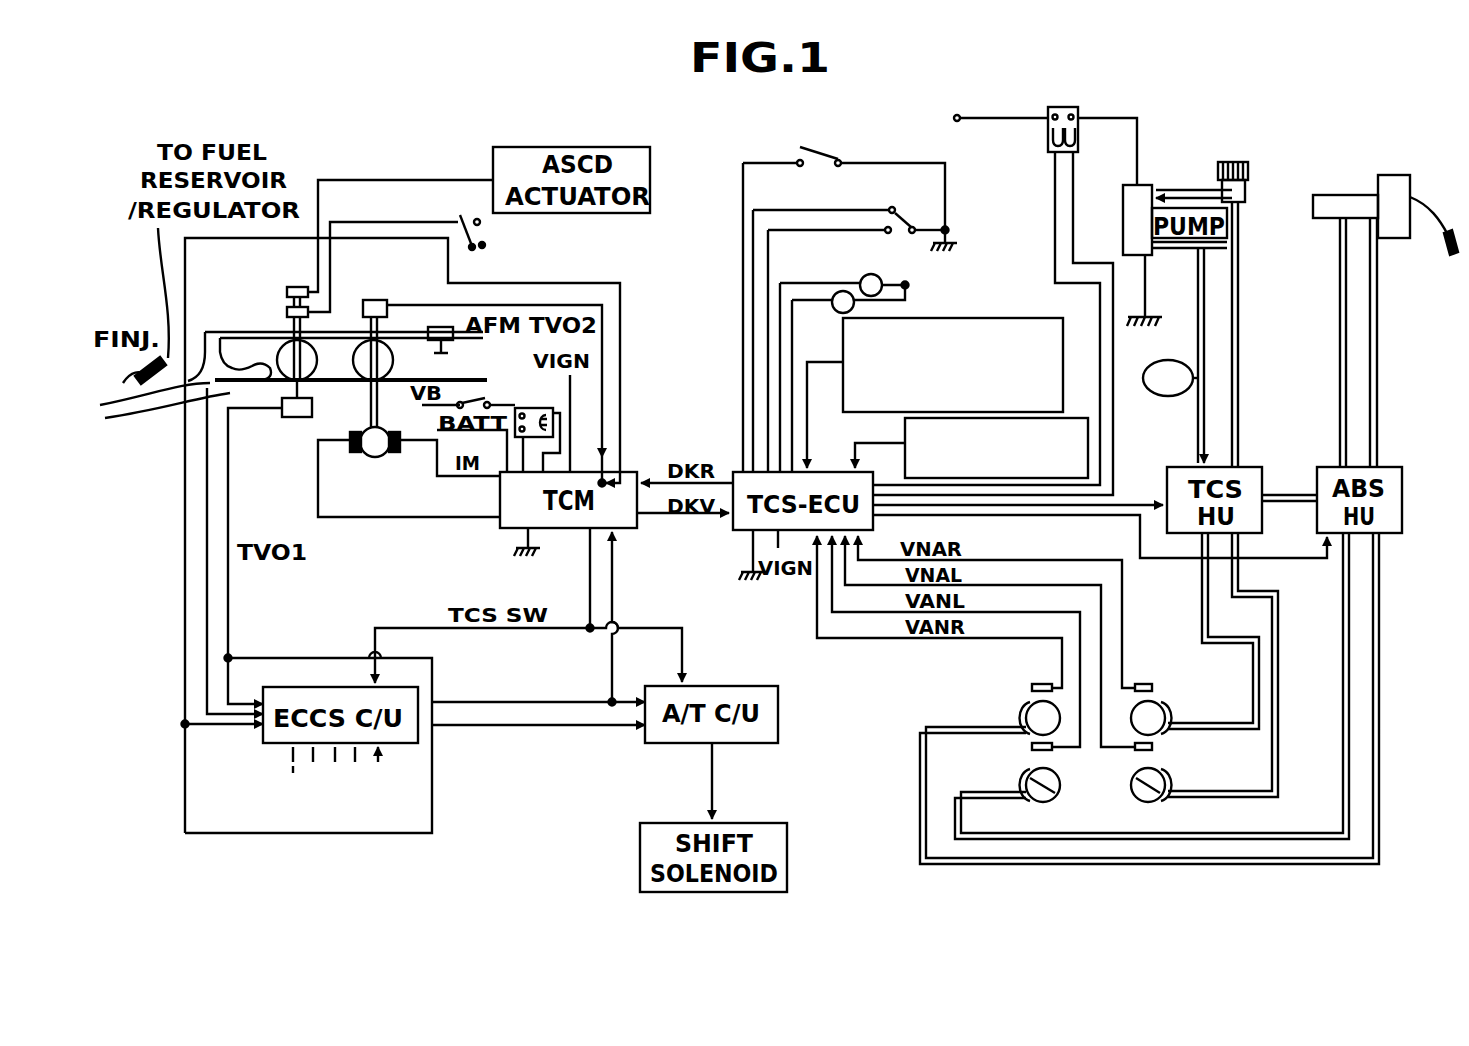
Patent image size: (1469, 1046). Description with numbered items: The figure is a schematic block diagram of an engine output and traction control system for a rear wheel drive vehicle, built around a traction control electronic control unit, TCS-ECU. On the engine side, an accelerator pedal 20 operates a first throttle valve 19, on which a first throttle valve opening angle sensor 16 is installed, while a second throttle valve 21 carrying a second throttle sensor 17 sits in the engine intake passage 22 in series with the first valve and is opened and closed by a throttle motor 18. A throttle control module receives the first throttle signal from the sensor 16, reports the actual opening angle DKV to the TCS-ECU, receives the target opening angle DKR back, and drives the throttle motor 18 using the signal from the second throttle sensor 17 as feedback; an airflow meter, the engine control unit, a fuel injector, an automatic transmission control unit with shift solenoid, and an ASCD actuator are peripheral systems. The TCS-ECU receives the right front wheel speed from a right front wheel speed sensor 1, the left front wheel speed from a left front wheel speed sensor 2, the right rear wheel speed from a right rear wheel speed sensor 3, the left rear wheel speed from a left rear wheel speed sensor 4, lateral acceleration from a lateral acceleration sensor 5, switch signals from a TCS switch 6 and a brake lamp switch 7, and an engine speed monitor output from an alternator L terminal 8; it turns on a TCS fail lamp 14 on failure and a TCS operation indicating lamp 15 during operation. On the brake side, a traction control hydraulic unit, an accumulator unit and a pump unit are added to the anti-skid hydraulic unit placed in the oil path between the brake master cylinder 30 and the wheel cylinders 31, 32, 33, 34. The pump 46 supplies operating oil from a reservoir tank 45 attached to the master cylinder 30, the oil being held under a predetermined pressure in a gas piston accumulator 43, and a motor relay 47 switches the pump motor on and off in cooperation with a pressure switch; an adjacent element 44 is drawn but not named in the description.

The right front wheel speed sensor 1 is at (1042, 684).
The left front wheel speed sensor 2 is at (1050, 751).
The right rear wheel speed sensor 3 is at (1142, 684).
The left rear wheel speed sensor 4 is at (1135, 751).
The lateral acceleration sensor 5 is at (1063, 325).
The TCS switch 6 is at (915, 220).
The brake lamp switch 7 is at (820, 152).
The alternator L terminal 8 is at (1080, 418).
The TCS fail lamp 14 is at (878, 275).
The TCS operation indicating lamp 15 is at (856, 308).
The first throttle valve opening angle sensor 16 is at (312, 410).
The second throttle sensor 17 is at (386, 301).
The throttle motor 18 is at (383, 457).
The first throttle valve 19 is at (290, 347).
The accelerator pedal 20 is at (485, 247).
The second throttle valve 21 is at (378, 400).
The engine intake passage 22 is at (248, 372).
The brake master cylinder 30 is at (1335, 195).
The wheel cylinder 31 is at (1053, 800).
The wheel cylinder 32 is at (1020, 718).
The wheel cylinder 33 is at (1136, 800).
The wheel cylinder 34 is at (1168, 718).
The gas piston accumulator 43 is at (1176, 360).
The accumulator 44 is at (1123, 232).
The reservoir tank 45 is at (1240, 162).
The pump 46 is at (1212, 240).
The motor relay 47 is at (1078, 128).